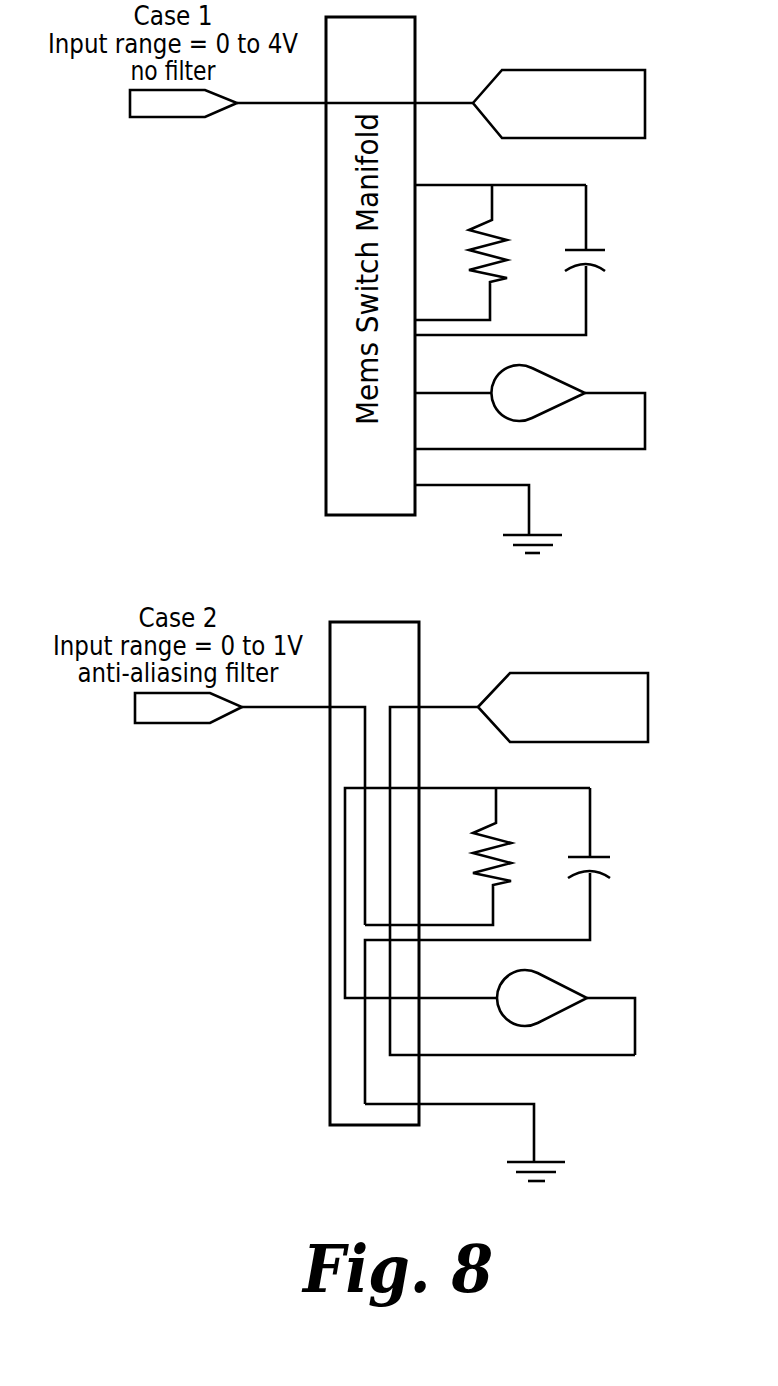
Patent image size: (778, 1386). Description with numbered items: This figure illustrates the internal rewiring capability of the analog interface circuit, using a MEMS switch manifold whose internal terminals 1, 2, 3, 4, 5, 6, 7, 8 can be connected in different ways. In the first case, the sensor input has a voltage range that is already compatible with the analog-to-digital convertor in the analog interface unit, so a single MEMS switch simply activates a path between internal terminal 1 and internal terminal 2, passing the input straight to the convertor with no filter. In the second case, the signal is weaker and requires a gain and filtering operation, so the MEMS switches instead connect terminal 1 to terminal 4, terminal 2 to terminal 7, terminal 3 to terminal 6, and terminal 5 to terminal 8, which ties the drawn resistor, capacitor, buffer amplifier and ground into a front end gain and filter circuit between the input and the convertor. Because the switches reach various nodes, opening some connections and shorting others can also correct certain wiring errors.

The internal terminal 1 is at (301, 507).
The internal terminal 2 is at (519, 562).
The internal terminal 3 is at (467, 591).
The internal terminal 4 is at (438, 556).
The internal terminal 5 is at (487, 644).
The internal terminal 6 is at (501, 699).
The internal terminal 7 is at (541, 724).
The internal terminal 8 is at (465, 818).